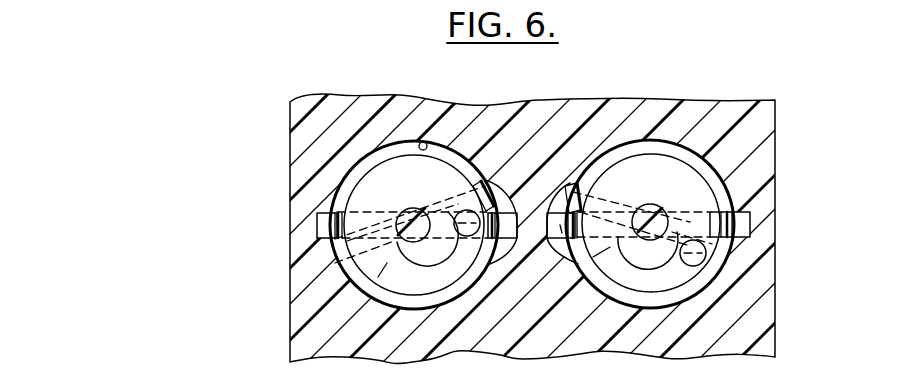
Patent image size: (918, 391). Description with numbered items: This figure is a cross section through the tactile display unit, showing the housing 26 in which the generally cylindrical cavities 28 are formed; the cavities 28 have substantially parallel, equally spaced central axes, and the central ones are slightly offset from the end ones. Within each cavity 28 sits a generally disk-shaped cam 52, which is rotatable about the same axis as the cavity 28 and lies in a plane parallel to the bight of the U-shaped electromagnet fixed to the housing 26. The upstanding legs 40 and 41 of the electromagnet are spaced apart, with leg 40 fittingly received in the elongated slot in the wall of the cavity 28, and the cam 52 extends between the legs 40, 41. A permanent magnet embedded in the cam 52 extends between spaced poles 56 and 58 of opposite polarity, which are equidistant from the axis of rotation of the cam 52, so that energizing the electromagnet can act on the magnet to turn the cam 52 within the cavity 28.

The housing 26 is at (296, 121).
The cavity 28 is at (420, 142).
The leg 40 is at (317, 218).
The leg 41 is at (502, 230).
The cam 52 is at (375, 178).
The pole 56 is at (343, 257).
The pole 58 is at (570, 187).